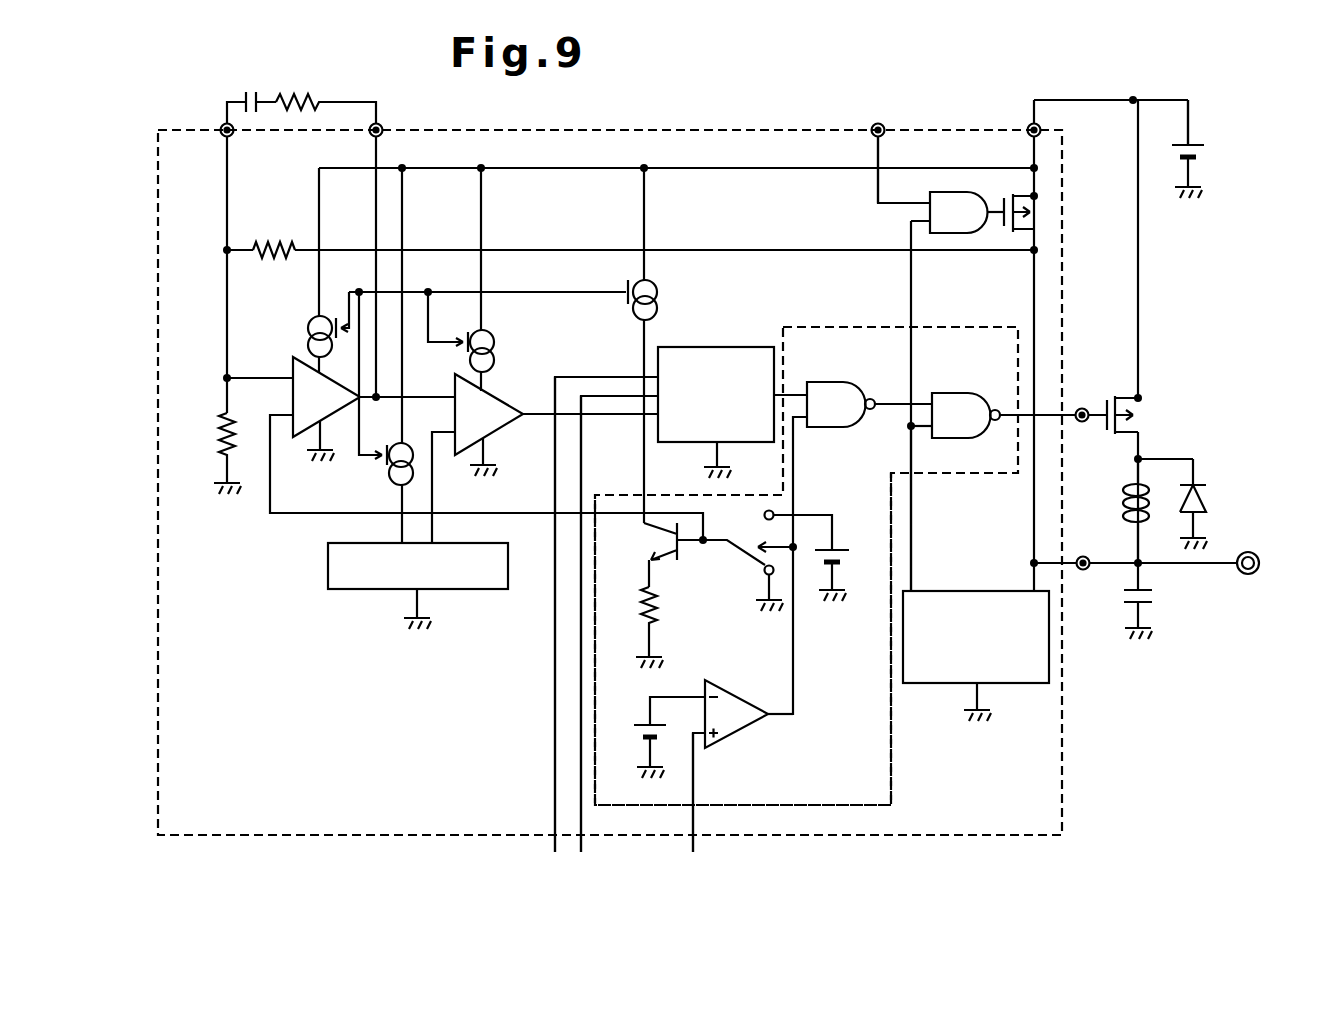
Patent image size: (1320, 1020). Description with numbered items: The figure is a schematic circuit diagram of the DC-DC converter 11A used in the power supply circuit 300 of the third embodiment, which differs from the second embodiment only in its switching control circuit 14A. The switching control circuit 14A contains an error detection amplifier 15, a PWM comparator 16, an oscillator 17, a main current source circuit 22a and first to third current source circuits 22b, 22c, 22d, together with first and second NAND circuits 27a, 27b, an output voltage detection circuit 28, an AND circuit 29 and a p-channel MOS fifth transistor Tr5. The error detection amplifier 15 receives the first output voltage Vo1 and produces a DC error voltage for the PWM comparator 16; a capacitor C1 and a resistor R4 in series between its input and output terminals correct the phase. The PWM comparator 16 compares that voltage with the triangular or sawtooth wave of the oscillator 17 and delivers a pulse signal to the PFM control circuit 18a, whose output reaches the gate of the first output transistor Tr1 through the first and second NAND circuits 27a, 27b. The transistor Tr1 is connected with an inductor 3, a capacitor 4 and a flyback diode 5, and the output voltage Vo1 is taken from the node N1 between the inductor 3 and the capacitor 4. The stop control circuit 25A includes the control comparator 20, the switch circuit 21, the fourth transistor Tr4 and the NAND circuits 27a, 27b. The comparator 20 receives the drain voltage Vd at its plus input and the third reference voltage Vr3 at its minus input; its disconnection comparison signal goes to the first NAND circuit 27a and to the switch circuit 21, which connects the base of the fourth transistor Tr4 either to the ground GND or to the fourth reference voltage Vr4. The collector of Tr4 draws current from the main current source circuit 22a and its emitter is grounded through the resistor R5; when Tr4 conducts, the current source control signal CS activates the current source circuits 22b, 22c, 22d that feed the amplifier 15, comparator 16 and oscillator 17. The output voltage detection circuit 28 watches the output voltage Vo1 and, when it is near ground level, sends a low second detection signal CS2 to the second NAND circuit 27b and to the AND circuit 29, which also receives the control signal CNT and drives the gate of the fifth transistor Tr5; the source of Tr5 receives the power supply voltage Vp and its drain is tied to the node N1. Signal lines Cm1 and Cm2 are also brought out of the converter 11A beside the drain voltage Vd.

The power supply circuit 300 is at (900, 54).
The DC-DC converter 11A is at (1124, 75).
The switching control circuit 14A is at (692, 128).
The capacitor C1 is at (246, 97).
The resistor R4 is at (321, 95).
The control signal CNT is at (876, 146).
The power supply voltage Vp is at (1206, 122).
The AND circuit 29 is at (930, 215).
The fifth transistor Tr5 is at (1037, 219).
The main current source circuit 22a is at (659, 292).
The first current source circuit 22b is at (317, 313).
The second current source circuit 22c is at (386, 479).
The third current source circuit 22d is at (492, 333).
The current source control signal CS is at (487, 278).
The error detection amplifier 15 is at (290, 368).
The PWM comparator 16 is at (455, 383).
The oscillator 17 is at (328, 566).
The PFM control circuit 18a is at (732, 346).
The first NAND circuit 27a is at (822, 382).
The second NAND circuit 27b is at (948, 393).
The first output transistor Tr1 is at (1128, 431).
The inductor 3 is at (1130, 494).
The flyback diode 5 is at (1198, 485).
The node N1 is at (1133, 557).
The capacitor 4 is at (1152, 585).
The ground GND is at (690, 520).
The first output voltage Vo1 is at (1273, 564).
The second detection signal CS2 is at (938, 508).
The output voltage detection circuit 28 is at (1035, 685).
The stop control circuit 25A is at (893, 773).
The fourth reference voltage Vr4 is at (822, 556).
The switch circuit 21 is at (747, 552).
The fourth transistor Tr4 is at (660, 557).
The resistor R5 is at (655, 620).
The control comparator 20 is at (742, 695).
The third reference voltage Vr3 is at (655, 737).
The comparison signal Cm1 is at (558, 628).
The comparison signal Cm2 is at (601, 638).
The drain voltage Vd is at (695, 806).